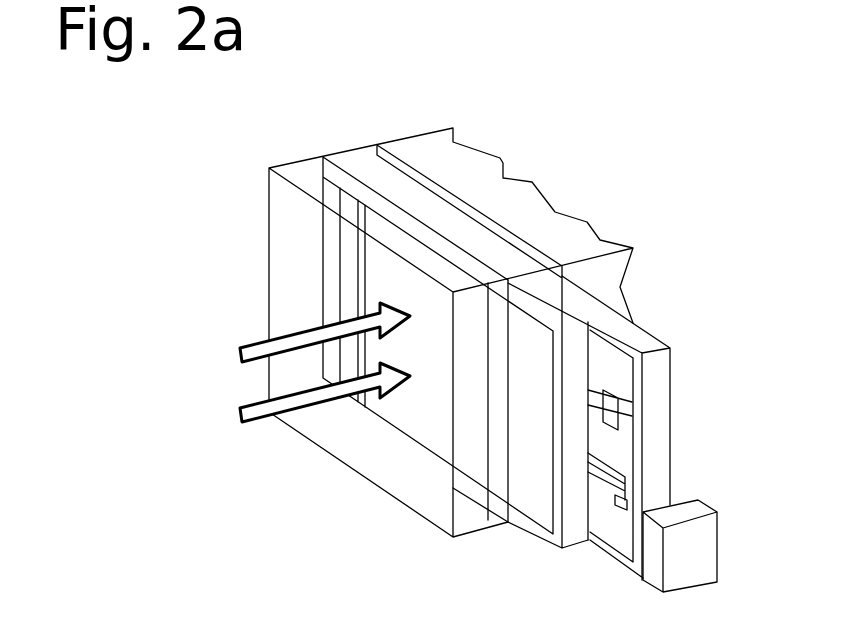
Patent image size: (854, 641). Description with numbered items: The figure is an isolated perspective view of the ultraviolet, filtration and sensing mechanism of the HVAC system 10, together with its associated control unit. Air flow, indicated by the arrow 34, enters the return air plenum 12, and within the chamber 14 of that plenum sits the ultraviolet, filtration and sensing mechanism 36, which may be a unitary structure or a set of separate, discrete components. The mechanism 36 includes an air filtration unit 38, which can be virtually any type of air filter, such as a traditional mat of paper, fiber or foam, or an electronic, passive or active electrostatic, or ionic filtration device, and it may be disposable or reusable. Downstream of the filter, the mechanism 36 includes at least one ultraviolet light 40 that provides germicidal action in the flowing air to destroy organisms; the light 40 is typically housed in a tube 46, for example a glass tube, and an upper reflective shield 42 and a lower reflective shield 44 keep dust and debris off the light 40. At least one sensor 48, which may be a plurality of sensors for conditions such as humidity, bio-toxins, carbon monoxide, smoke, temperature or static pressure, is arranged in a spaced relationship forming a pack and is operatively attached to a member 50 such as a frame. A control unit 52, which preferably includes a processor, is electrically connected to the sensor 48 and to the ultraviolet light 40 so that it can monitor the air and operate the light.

The HVAC system 10 is at (645, 208).
The return air plenum 12 is at (283, 232).
The chamber 14 is at (363, 165).
The arrow 34 is at (240, 414).
The ultraviolet, filtration and sensing mechanism 36 is at (485, 339).
The air filtration unit 38 is at (546, 426).
The ultraviolet light 40 is at (607, 508).
The upper reflective shield 42 is at (600, 465).
The lower reflective shield 44 is at (618, 512).
The tube 46 is at (590, 485).
The sensor 48 is at (632, 430).
The member 50 is at (660, 373).
The control unit 52 is at (684, 578).